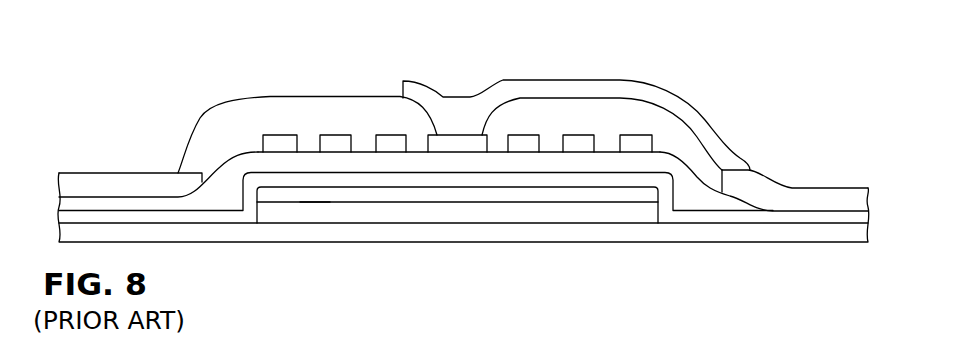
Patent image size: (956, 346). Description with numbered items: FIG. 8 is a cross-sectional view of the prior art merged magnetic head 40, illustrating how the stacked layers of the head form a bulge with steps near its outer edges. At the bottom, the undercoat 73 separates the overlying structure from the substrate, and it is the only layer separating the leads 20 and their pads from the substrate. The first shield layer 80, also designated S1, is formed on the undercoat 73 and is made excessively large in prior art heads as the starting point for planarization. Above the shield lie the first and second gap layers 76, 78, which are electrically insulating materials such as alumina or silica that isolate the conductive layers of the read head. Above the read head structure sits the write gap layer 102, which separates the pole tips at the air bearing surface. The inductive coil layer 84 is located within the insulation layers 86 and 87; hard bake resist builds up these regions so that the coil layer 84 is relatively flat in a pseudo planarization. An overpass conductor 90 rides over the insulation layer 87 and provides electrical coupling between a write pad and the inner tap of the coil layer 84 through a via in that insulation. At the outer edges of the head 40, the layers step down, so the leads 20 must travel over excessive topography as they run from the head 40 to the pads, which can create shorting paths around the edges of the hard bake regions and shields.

The merged magnetic head 40 is at (463, 148).
The leads 20 is at (97, 180).
The inductive coil layer 84 is at (333, 135).
The overpass conductor 90 is at (546, 85).
The insulation layer 87 is at (636, 112).
The insulation layer 86 is at (692, 182).
The write gap layer 102 is at (222, 216).
The first shield layer S1 is at (352, 215).
The first shield layer 80 is at (457, 249).
The first gap layer 76 is at (457, 242).
The second gap layer 78 is at (582, 197).
The undercoat 73 is at (817, 235).